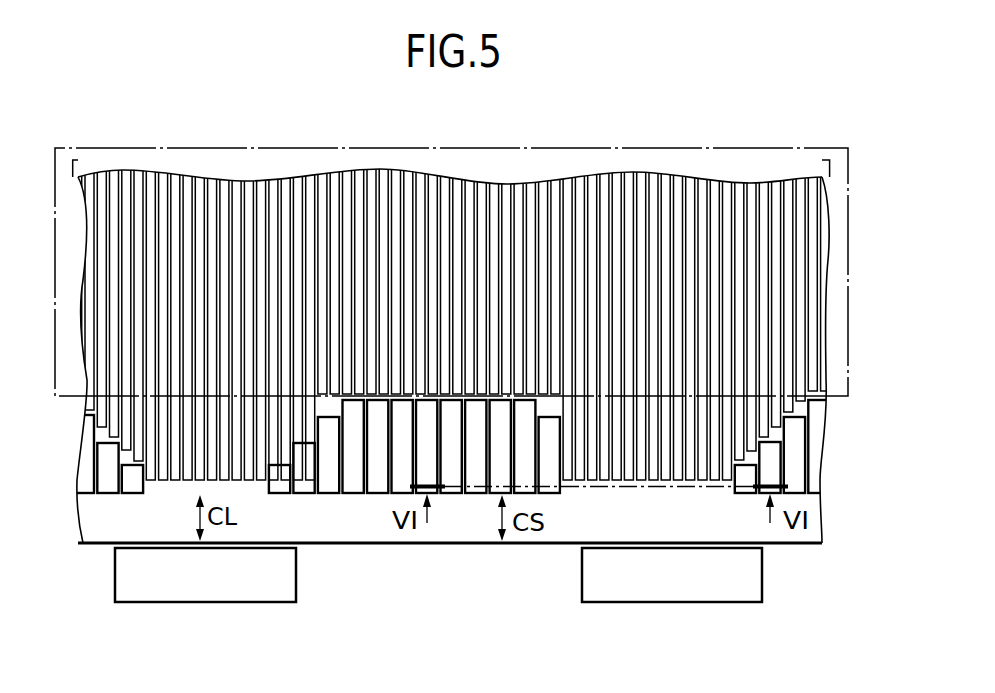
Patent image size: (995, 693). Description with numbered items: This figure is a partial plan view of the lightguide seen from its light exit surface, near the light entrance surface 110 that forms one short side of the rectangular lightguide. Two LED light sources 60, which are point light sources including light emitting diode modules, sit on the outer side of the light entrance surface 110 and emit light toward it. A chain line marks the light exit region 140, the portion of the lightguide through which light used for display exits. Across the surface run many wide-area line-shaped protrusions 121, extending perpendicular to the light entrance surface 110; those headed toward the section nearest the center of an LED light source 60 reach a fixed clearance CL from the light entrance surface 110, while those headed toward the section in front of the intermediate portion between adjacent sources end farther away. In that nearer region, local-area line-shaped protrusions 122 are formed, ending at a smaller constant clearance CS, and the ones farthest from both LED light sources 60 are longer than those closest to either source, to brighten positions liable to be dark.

The wide-area line-shaped protrusion 121 is at (359, 188).
The local-area line-shaped protrusion 122 is at (378, 487).
The light entrance surface 110 is at (440, 545).
The light exit region 140 is at (553, 146).
The LED light source 60 is at (672, 603).